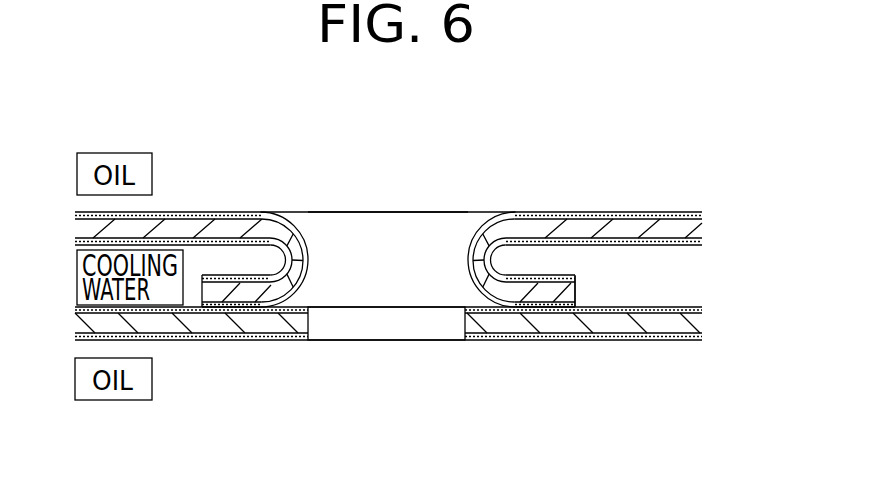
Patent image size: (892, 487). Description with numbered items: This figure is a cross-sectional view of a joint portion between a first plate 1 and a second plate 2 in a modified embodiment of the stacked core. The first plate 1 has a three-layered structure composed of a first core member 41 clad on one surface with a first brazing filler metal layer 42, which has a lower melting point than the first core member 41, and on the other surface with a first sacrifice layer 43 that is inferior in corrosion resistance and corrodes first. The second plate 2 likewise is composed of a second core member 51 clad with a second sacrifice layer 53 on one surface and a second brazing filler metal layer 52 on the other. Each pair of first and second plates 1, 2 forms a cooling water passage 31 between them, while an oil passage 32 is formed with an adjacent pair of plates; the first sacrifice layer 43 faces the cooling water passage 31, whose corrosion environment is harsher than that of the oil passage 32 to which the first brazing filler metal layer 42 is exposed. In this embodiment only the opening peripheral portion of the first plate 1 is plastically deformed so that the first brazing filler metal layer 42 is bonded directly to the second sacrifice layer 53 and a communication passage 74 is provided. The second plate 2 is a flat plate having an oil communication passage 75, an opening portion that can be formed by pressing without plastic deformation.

The first plate 1 is at (412, 204).
The second plate 2 is at (411, 354).
The cooling water passage 31 is at (625, 289).
The oil passage 32 is at (525, 197).
The first core member 41 is at (630, 232).
The first brazing filler metal layer 42 is at (568, 218).
The first sacrifice layer 43 is at (657, 246).
The second core member 51 is at (628, 340).
The second brazing filler metal layer 52 is at (554, 340).
The second sacrifice layer 53 is at (637, 308).
The communication passage 74 is at (390, 240).
The oil communication passage 75 is at (387, 327).